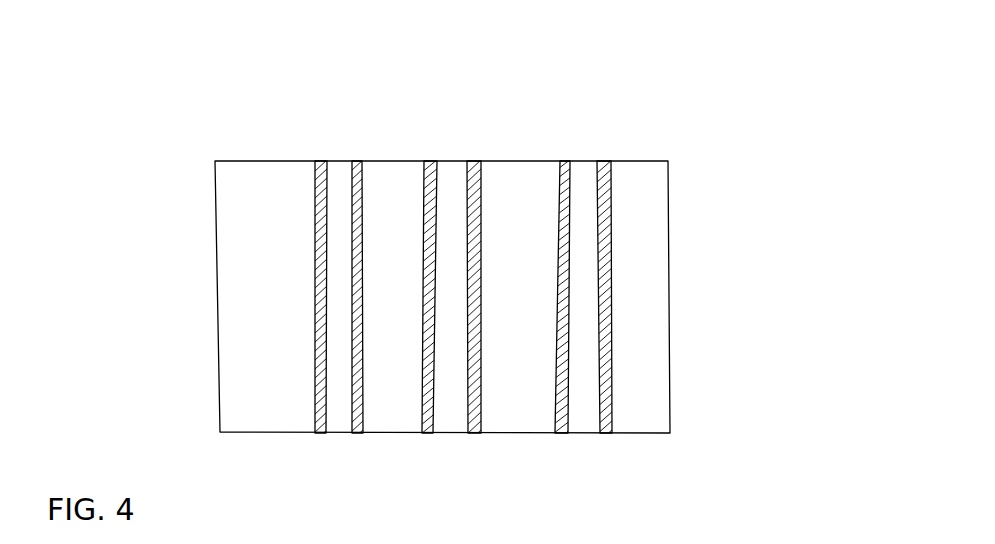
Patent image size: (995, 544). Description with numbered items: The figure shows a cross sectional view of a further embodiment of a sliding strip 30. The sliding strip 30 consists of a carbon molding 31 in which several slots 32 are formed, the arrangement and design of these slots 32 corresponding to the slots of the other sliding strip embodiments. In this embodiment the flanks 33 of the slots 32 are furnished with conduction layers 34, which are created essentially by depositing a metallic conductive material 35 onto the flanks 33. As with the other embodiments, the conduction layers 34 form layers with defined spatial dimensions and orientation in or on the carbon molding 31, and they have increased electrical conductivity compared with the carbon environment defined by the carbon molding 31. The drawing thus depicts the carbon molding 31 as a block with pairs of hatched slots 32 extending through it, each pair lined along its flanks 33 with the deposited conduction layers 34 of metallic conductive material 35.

The sliding strip 30 is at (721, 104).
The carbon molding 31 is at (655, 305).
The slots 32 is at (598, 160).
The flanks 33 is at (337, 373).
The conduction layers 34 is at (326, 162).
The metallic conductive material 35 is at (436, 166).